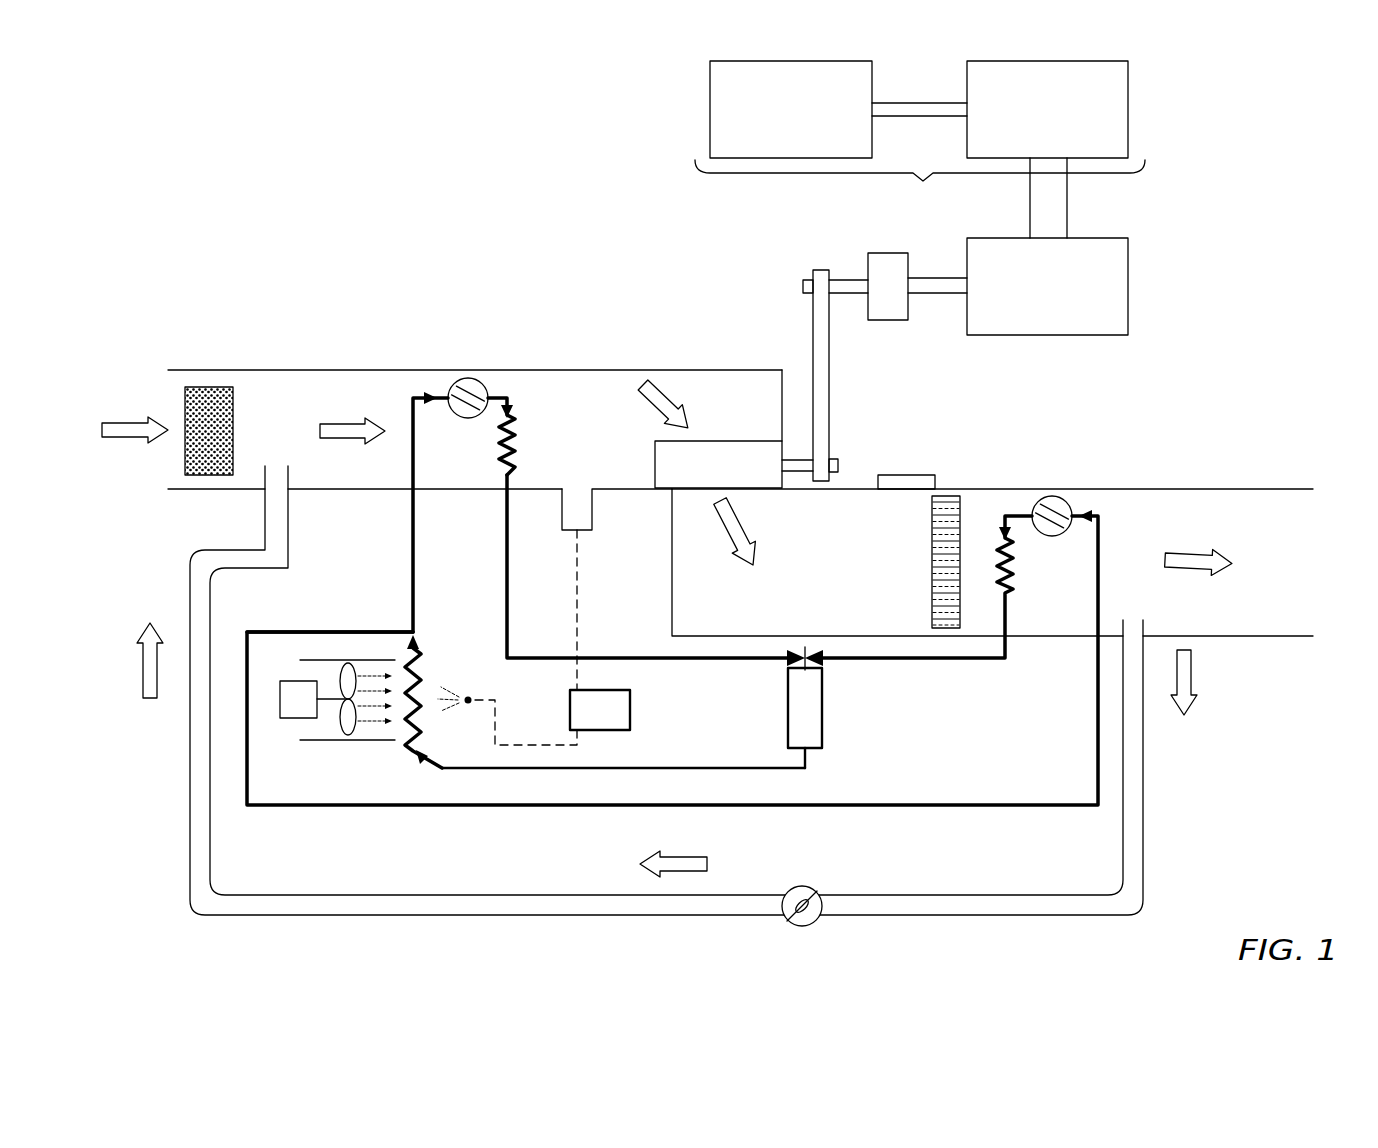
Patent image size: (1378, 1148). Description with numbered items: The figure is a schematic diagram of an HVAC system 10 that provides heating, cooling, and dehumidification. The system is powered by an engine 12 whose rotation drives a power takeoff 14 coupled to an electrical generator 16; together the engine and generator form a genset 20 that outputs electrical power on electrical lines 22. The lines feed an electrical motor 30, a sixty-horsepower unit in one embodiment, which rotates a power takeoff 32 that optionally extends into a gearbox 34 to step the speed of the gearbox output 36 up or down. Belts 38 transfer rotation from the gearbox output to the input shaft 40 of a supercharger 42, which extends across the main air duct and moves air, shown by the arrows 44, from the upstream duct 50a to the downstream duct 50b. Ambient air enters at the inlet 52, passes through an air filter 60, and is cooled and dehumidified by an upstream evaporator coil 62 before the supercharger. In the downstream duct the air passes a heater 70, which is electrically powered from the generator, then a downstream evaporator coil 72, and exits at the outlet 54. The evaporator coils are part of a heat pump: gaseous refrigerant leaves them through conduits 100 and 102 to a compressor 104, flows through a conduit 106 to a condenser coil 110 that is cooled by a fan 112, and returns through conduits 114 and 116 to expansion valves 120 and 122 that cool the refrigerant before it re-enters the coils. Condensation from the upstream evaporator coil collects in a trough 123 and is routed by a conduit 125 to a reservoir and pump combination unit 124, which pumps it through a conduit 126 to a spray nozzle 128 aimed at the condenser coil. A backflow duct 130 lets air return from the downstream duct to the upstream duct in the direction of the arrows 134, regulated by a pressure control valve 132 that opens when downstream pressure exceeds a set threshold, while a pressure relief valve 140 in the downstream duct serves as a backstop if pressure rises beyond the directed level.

The HVAC system 10 is at (235, 158).
The engine 12 is at (710, 108).
The power takeoff 14 is at (922, 103).
The electrical generator 16 is at (1128, 108).
The genset 20 is at (920, 187).
The electrical lines 22 is at (1030, 204).
The electrical motor 30 is at (1128, 290).
The power takeoff 32 is at (942, 298).
The gearbox 34 is at (875, 255).
The gearbox output 36 is at (845, 281).
The belts 38 is at (813, 308).
The input shaft 40 is at (838, 468).
The supercharger 42 is at (735, 452).
The airflow 44 is at (120, 420).
The upstream duct 50a is at (355, 396).
The downstream duct 50b is at (1192, 518).
The inlet 52 is at (178, 387).
The outlet 54 is at (1293, 603).
The air filter 60 is at (185, 468).
The upstream evaporator coil 62 is at (515, 447).
The heater 70 is at (932, 587).
The downstream evaporator coil 72 is at (1013, 567).
The conduit 100 is at (628, 657).
The conduit 102 is at (972, 665).
The compressor 104 is at (822, 712).
The conduit 106 is at (748, 768).
The condenser coil 110 is at (421, 719).
The fan 112 is at (348, 728).
The conduit 114 is at (413, 527).
The conduit 116 is at (320, 633).
The expansion valve 120 is at (468, 380).
The expansion valve 122 is at (1052, 498).
The trough 123 is at (592, 510).
The reservoir and pump combination unit 124 is at (630, 708).
The conduit 125 is at (577, 632).
The conduit 126 is at (532, 747).
The spray nozzle 128 is at (468, 697).
The backflow duct 130 is at (190, 590).
The pressure control valve 132 is at (808, 888).
The arrows 134 is at (143, 668).
The pressure relief valve 140 is at (912, 477).